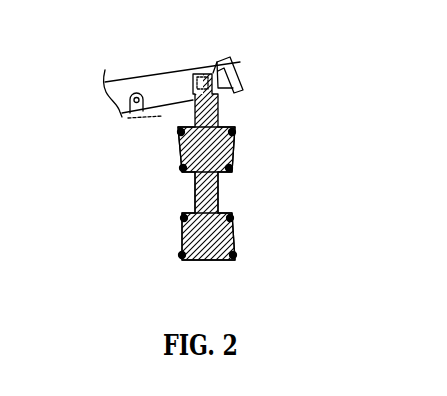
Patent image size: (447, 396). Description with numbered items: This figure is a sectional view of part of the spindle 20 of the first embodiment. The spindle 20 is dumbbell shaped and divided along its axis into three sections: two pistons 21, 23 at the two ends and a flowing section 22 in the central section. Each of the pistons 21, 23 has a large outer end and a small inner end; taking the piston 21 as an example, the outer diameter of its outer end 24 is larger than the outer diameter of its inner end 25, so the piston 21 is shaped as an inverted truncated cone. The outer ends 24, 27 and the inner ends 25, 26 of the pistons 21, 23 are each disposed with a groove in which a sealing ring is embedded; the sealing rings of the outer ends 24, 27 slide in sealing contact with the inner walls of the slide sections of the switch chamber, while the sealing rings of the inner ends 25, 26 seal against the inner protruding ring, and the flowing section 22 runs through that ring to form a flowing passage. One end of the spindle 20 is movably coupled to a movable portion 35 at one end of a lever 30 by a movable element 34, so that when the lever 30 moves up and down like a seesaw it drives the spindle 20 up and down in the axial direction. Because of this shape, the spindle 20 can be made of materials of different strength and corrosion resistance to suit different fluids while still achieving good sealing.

The spindle 20 is at (277, 130).
The piston 21 is at (180, 148).
The flowing section 22 is at (193, 198).
The piston 23 is at (182, 242).
The outer end 24 is at (177, 132).
The inner end 25 is at (182, 171).
The inner end 26 is at (233, 219).
The outer end 27 is at (234, 254).
The lever 30 is at (137, 63).
The movable element 34 is at (202, 80).
The movable portion 35 is at (241, 63).